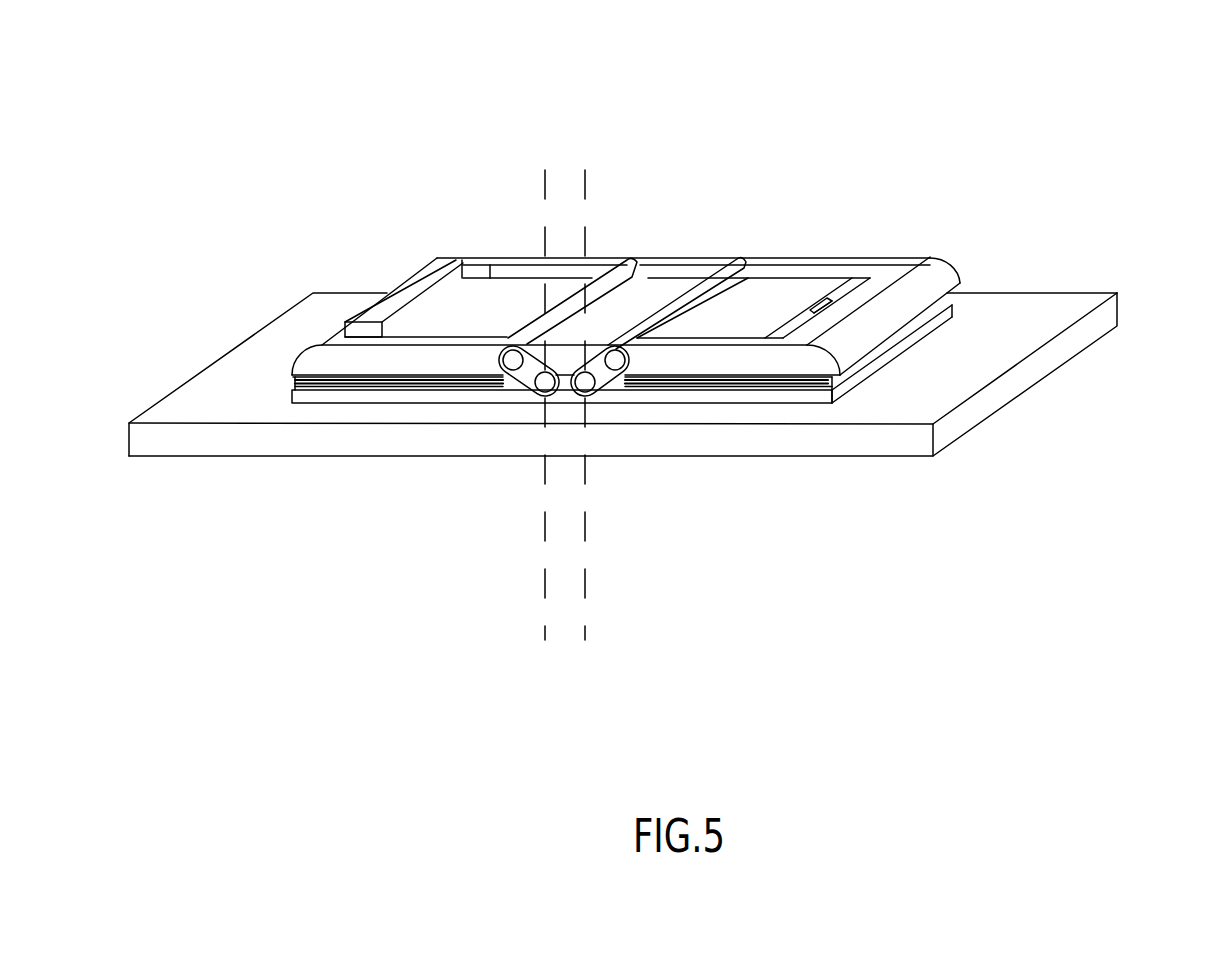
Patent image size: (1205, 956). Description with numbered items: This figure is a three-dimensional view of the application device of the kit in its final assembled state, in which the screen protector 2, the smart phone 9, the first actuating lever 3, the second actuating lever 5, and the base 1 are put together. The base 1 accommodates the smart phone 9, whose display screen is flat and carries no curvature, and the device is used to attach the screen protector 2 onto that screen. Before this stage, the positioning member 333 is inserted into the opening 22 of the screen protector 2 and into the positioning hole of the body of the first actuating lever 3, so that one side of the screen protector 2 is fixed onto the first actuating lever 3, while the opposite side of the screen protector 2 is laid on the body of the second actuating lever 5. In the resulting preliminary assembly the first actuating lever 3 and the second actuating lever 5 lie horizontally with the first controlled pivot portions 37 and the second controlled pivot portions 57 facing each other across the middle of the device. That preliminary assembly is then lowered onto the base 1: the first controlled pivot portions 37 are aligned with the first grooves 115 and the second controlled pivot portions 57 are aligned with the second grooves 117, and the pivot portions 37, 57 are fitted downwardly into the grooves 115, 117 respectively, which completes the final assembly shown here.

The base 1 is at (877, 370).
The screen protector 2 is at (478, 258).
The first actuating lever 3 is at (888, 211).
The second actuating lever 5 is at (561, 212).
The smart phone 9 is at (567, 363).
The opening 22 is at (810, 308).
The first controlled pivot portions 37 is at (605, 347).
The second controlled pivot portions 57 is at (533, 362).
The first grooves 115 is at (740, 390).
The second grooves 117 is at (442, 390).
The positioning member 333 is at (828, 298).